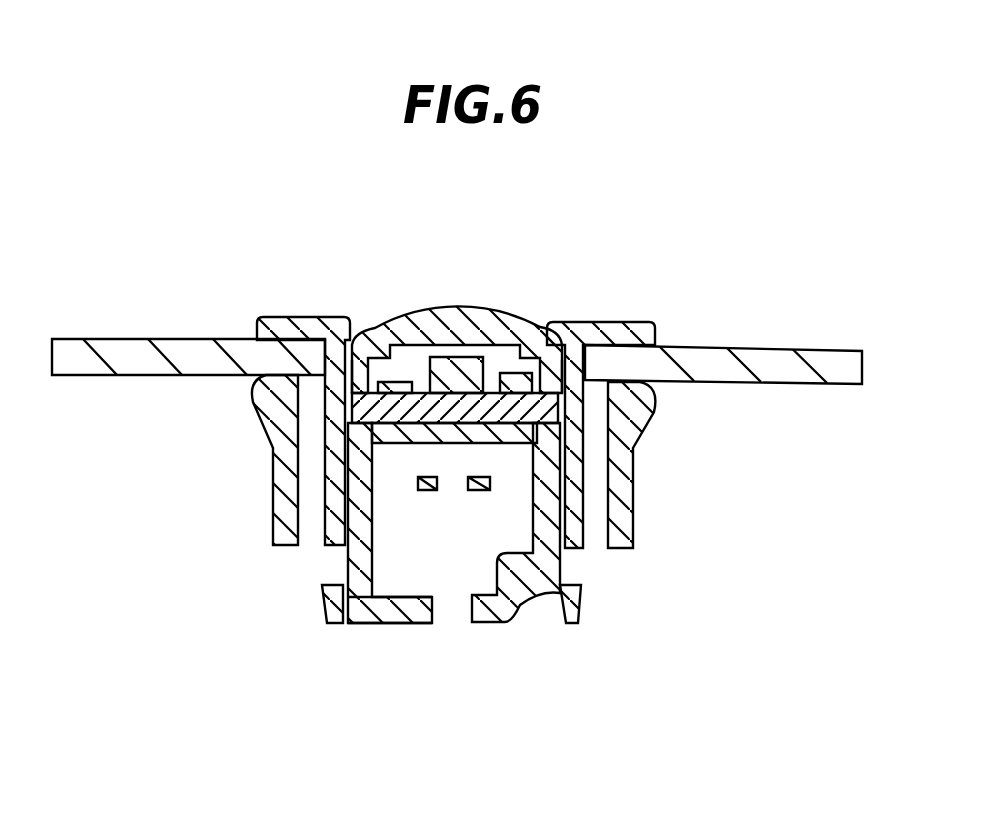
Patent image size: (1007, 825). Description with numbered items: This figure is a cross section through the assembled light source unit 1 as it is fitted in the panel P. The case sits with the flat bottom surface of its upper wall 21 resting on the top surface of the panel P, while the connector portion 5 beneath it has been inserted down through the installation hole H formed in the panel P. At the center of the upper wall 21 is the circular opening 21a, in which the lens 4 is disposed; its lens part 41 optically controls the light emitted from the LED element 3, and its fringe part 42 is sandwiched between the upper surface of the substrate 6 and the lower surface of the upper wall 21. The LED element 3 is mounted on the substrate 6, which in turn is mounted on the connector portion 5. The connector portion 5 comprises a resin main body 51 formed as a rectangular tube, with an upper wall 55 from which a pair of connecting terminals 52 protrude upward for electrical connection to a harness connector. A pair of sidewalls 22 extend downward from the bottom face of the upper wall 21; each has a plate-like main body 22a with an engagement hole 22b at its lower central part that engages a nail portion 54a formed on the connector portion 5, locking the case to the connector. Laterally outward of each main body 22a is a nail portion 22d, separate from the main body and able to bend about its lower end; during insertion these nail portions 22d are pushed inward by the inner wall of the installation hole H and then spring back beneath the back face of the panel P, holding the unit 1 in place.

The light source unit 1 is at (303, 204).
The panel P is at (822, 344).
The installation hole H is at (548, 364).
The upper wall 21 is at (283, 312).
The opening 21a is at (546, 343).
The sidewalls 22 is at (455, 434).
The main body 22a is at (333, 478).
The engagement hole 22b is at (338, 552).
The nail portion 22d is at (262, 410).
The LED element 3 is at (478, 357).
The lens 4 is at (457, 302).
The lens part 41 is at (447, 316).
The fringe part 42 is at (364, 352).
The substrate 6 is at (560, 412).
The connector portion 5 is at (452, 561).
The main body 51 is at (378, 615).
The connecting terminals 52 is at (427, 492).
The nail portion 54a is at (330, 578).
The upper wall 55 is at (447, 448).